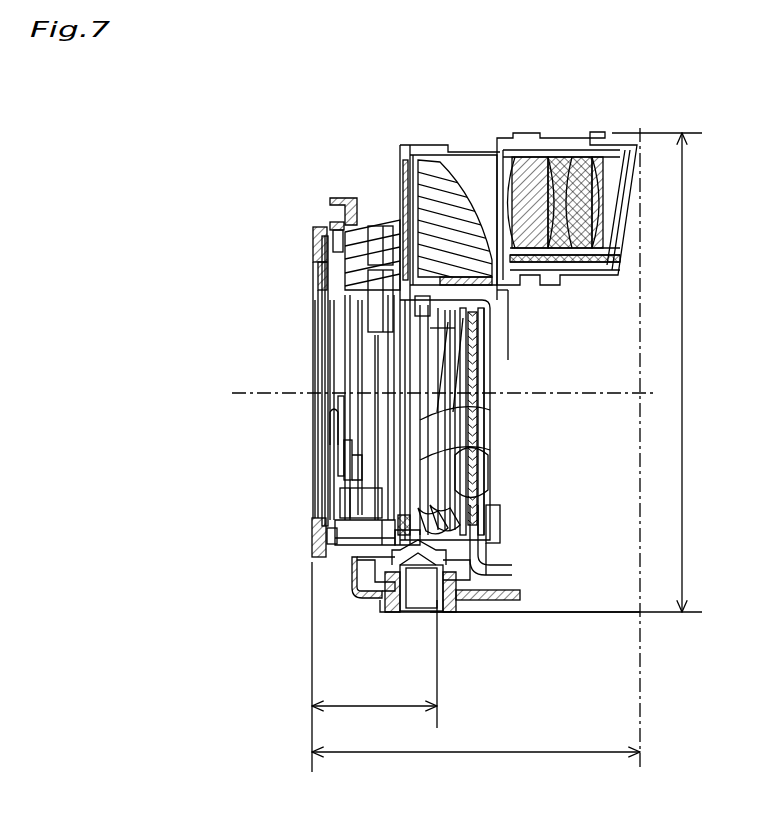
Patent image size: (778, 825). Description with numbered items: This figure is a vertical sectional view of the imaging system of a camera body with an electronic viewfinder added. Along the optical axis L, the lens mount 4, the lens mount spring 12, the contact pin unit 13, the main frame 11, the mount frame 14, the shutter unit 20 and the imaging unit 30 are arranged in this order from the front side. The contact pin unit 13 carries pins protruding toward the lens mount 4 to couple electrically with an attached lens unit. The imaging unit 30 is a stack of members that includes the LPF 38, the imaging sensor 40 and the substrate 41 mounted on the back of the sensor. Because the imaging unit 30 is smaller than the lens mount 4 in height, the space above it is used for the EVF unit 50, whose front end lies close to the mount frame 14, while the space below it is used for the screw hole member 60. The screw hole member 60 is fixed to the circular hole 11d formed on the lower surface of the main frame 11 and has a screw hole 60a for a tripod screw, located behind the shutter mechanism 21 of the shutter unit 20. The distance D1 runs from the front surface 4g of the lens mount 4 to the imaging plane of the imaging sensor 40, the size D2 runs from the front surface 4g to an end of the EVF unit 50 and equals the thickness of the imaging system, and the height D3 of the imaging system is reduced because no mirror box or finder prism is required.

The optical axis L is at (258, 387).
The lens mount 4 is at (317, 233).
The front surface 4g is at (311, 307).
The main frame 11 is at (349, 198).
The circular hole 11d is at (378, 600).
The lens mount spring 12 is at (338, 286).
The contact pin unit 13 is at (338, 470).
The mount frame 14 is at (335, 224).
The shutter unit 20 is at (340, 506).
The shutter mechanism 21 is at (385, 268).
The imaging unit 30 is at (500, 393).
The LPF 38 is at (470, 390).
The imaging sensor 40 is at (466, 419).
The substrate 41 is at (490, 468).
The EVF unit 50 is at (644, 110).
The screw hole member 60 is at (446, 612).
The screw hole 60a is at (420, 615).
The distance D1 is at (350, 706).
The size D2 is at (520, 752).
The height D3 is at (682, 357).